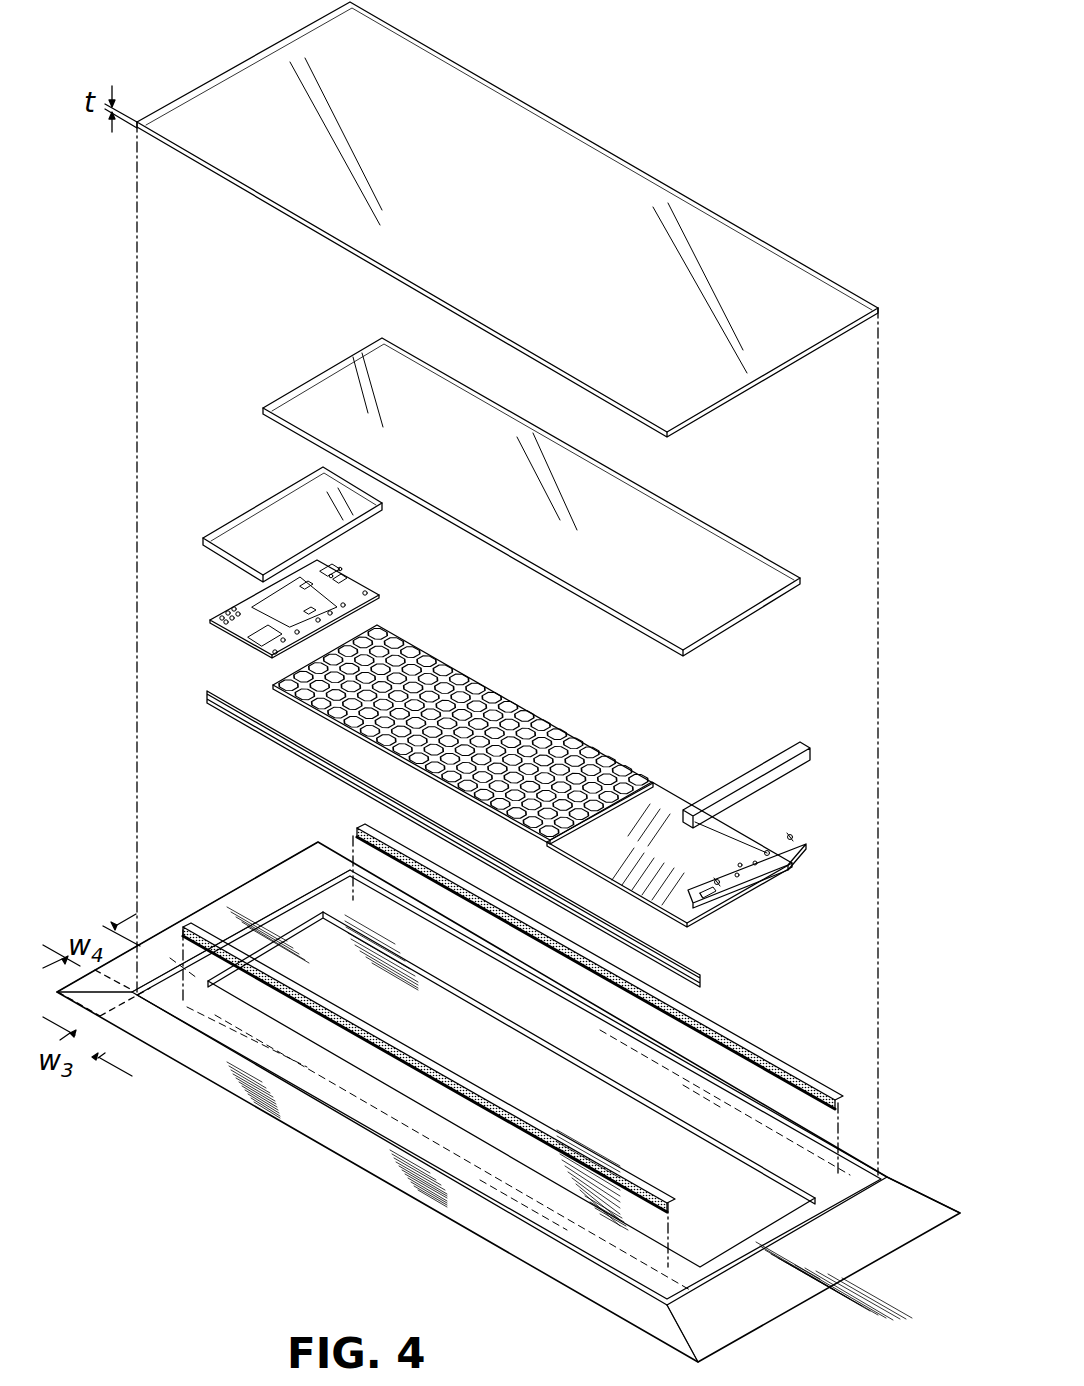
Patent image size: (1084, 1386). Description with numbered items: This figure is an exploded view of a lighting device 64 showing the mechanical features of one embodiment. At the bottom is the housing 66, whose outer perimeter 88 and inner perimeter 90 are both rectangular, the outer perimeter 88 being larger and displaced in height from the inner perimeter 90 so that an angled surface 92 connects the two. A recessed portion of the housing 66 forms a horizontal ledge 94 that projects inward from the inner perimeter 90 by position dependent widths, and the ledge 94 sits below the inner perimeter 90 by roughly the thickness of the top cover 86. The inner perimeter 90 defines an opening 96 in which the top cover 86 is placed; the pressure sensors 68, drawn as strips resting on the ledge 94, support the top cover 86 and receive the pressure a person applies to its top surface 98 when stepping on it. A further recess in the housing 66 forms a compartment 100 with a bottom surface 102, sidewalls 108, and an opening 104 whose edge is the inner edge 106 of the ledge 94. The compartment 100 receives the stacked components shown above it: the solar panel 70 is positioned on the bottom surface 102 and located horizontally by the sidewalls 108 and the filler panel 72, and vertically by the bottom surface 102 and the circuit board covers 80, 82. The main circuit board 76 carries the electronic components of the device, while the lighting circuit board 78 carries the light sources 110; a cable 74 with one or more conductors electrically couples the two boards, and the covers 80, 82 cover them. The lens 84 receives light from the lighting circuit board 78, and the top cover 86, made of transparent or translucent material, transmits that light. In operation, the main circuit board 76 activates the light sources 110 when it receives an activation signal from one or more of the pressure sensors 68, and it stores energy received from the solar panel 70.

The lighting device 64 is at (746, 128).
The housing 66 is at (338, 1152).
The pressure sensors 68 is at (240, 943).
The solar panel 70 is at (568, 741).
The filler panel 72 is at (662, 789).
The cable 74 is at (703, 974).
The main circuit board 76 is at (247, 611).
The lighting circuit board 78 is at (808, 847).
The circuit board cover 80 is at (258, 506).
The circuit board cover 82 is at (803, 753).
The lens 84 is at (770, 551).
The top cover 86 is at (838, 276).
The outer perimeter 88 is at (282, 862).
The inner perimeter 90 is at (332, 892).
The angled surface 92 is at (911, 1229).
The horizontal ledge 94 is at (277, 1063).
The opening 96 is at (460, 1170).
The top surface 98 is at (756, 265).
The compartment 100 is at (636, 1239).
The bottom surface 102 is at (740, 1222).
The opening 104 is at (555, 1168).
The inner edge 106 is at (690, 1255).
The sidewalls 108 is at (297, 933).
The light sources 110 is at (790, 837).